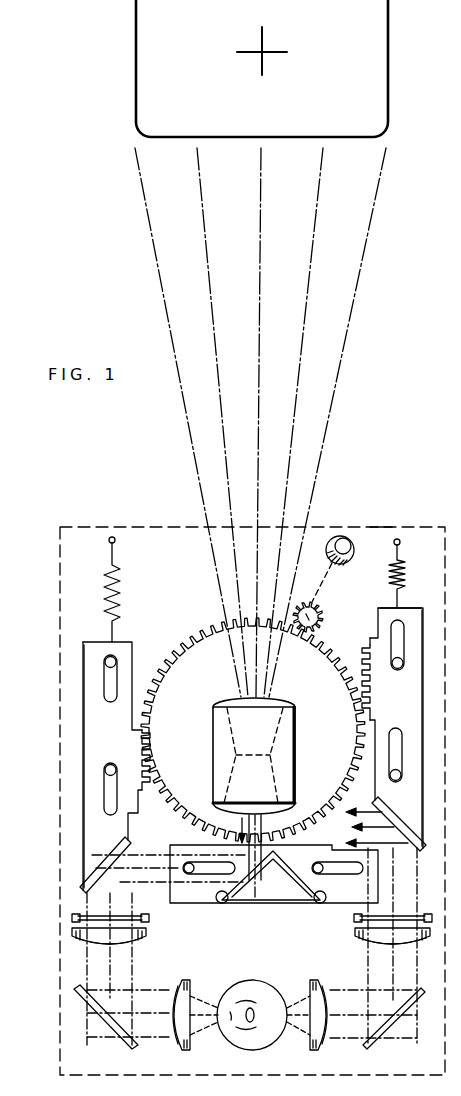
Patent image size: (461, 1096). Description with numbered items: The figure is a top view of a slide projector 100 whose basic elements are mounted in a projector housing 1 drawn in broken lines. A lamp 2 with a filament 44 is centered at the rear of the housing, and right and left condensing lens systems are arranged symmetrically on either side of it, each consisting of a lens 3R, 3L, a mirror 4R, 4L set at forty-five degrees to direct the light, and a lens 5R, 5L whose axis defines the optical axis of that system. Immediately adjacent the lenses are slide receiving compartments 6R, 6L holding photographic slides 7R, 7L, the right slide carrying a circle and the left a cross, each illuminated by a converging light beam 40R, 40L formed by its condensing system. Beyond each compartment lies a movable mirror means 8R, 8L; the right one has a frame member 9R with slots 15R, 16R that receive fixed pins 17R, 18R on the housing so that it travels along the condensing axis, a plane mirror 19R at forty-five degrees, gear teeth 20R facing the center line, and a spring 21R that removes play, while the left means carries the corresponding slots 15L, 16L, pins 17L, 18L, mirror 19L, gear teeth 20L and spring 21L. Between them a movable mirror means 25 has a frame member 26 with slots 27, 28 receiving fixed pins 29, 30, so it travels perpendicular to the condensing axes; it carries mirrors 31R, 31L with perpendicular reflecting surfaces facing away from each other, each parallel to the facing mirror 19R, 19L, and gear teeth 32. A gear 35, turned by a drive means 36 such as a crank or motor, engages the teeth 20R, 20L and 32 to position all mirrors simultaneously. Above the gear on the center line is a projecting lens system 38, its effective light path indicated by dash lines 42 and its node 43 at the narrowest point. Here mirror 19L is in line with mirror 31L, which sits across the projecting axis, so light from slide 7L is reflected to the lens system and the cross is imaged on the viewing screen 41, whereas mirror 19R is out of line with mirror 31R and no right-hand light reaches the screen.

The viewing screen 41 is at (148, 15).
The slide projector 100 is at (153, 516).
The projector housing 1 is at (378, 527).
The gear 35 is at (207, 622).
The drive means 36 is at (312, 602).
The projecting lens system 38 is at (283, 697).
The dash lines 42 is at (227, 722).
The node 43 is at (259, 760).
The slot 27 is at (202, 866).
The movable mirror means 8L is at (78, 724).
The mirror 19L is at (92, 650).
The gear teeth 20L is at (146, 792).
The slot 15L is at (110, 702).
The fixed pin 17L is at (104, 661).
The slot 16L is at (112, 814).
The fixed pin 18L is at (104, 772).
The converging light beam 40L is at (130, 880).
The spring 21L is at (120, 596).
The movable mirror means 8R is at (425, 705).
The frame member 9R is at (415, 608).
The mirror 19R is at (398, 828).
The gear teeth 20R is at (358, 650).
The slot 15R is at (399, 622).
The fixed pin 17R is at (400, 665).
The slot 16R is at (400, 748).
The fixed pin 18R is at (400, 775).
The converging light beam 40R is at (398, 878).
The spring 21R is at (388, 580).
The gear teeth 32 is at (365, 827).
The movable mirror means 25 is at (254, 908).
The fixed pin 29 is at (191, 876).
The fixed pin 30 is at (342, 876).
The slot 28 is at (340, 905).
The frame member 26 is at (273, 906).
The mirror 31L is at (214, 908).
The mirror 31R is at (313, 908).
The photographic slide 7L is at (84, 916).
The slide receiving compartment 6L is at (72, 922).
The lens 5L is at (140, 945).
The mirror 4L is at (102, 1022).
The lens 3L is at (176, 1046).
The lamp 2 is at (266, 990).
The filament 44 is at (244, 1040).
The lens 3R is at (324, 1046).
The mirror 4R is at (396, 1020).
The photographic slide 7R is at (405, 916).
The slide receiving compartment 6R is at (432, 922).
The lens 5R is at (364, 946).